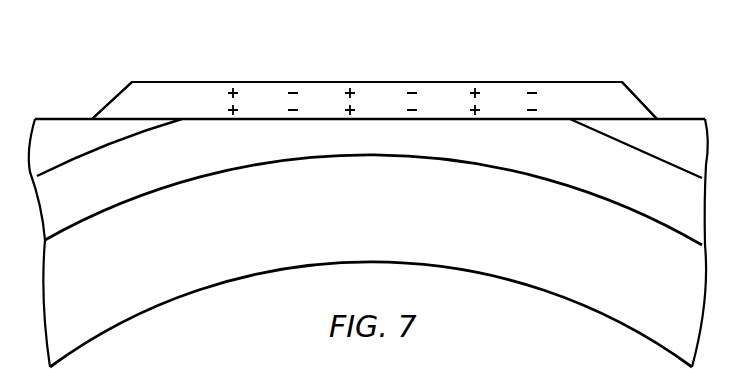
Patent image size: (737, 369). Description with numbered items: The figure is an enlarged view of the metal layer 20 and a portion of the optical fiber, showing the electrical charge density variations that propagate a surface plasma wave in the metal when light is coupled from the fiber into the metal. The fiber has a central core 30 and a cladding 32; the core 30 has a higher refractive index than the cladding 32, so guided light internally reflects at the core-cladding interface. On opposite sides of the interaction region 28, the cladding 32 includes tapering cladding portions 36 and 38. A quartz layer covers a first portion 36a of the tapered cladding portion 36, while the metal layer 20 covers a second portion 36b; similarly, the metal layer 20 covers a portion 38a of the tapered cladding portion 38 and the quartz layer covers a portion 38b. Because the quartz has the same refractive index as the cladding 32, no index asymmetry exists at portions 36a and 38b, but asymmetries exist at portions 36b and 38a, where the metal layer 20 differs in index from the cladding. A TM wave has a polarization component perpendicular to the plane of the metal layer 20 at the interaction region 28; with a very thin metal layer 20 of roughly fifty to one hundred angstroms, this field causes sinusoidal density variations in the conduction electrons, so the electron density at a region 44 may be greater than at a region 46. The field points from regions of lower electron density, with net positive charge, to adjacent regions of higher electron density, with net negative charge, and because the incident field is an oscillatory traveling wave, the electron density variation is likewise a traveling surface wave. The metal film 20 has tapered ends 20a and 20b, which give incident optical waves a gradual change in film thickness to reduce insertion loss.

The metal layer 20 is at (386, 72).
The tapered end of metal film 20a is at (112, 97).
The tapered end of metal film 20b is at (632, 94).
The interaction region 28 is at (355, 145).
The central core 30 is at (178, 186).
The cladding 32 is at (185, 300).
The tapering cladding portion 36 is at (55, 100).
The first portion of tapered cladding portion 36a is at (55, 155).
The second portion of tapered cladding portion 36b is at (121, 140).
The tapering cladding portion 38 is at (687, 100).
The portion of tapered cladding portion 38a is at (622, 142).
The portion of tapered cladding portion 38b is at (681, 160).
The region of higher electron density 44 is at (305, 69).
The region of lower electron density 46 is at (360, 69).